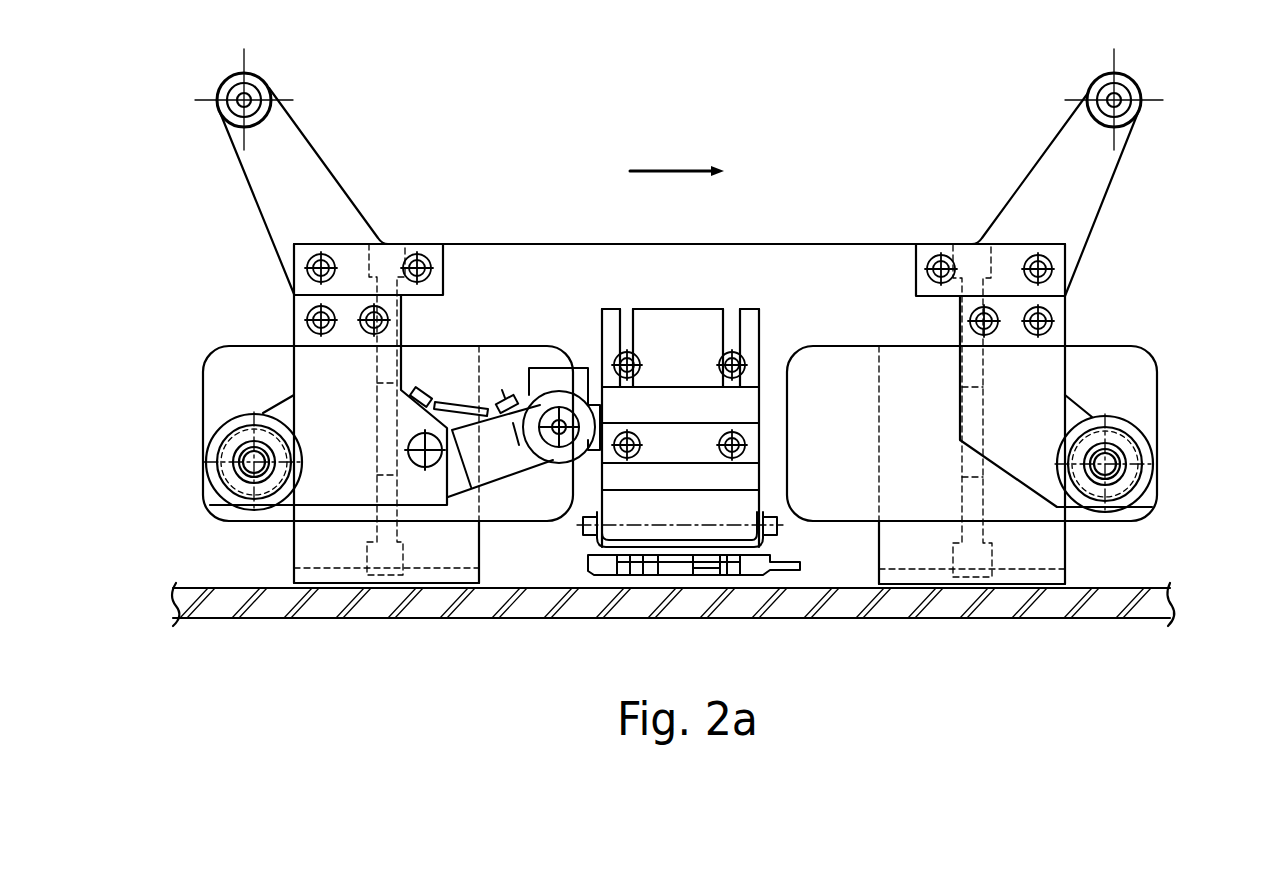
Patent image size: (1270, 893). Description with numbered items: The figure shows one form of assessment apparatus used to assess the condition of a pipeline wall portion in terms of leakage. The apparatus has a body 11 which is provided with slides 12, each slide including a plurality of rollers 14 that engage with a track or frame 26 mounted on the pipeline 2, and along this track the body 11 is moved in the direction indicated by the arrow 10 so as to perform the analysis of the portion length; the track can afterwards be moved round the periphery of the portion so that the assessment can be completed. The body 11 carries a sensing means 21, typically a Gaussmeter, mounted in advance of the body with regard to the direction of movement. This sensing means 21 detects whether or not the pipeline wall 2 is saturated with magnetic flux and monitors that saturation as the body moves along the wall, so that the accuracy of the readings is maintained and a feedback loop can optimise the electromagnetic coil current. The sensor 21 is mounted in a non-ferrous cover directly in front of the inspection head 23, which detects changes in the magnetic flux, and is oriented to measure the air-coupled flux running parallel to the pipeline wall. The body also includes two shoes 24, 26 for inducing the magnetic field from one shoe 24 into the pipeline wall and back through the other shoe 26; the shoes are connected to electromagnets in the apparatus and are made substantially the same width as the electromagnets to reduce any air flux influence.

The pipeline 2 is at (1053, 620).
The arrow 10 is at (691, 174).
The body 11 is at (673, 407).
The slides 12 is at (222, 364).
The rollers 14 is at (212, 446).
The sensing means 21 is at (797, 573).
The inspection head 23 is at (677, 508).
The shoe 24 is at (1053, 541).
The shoe 26 is at (328, 538).